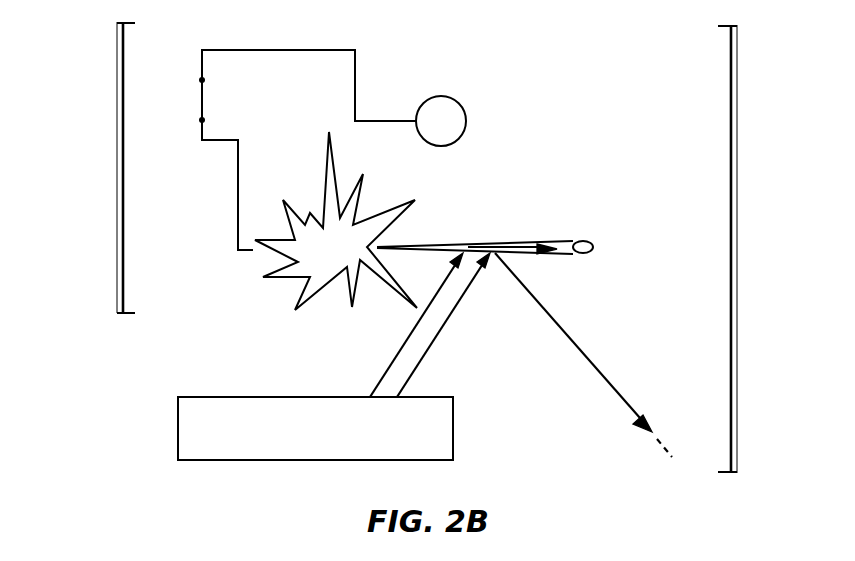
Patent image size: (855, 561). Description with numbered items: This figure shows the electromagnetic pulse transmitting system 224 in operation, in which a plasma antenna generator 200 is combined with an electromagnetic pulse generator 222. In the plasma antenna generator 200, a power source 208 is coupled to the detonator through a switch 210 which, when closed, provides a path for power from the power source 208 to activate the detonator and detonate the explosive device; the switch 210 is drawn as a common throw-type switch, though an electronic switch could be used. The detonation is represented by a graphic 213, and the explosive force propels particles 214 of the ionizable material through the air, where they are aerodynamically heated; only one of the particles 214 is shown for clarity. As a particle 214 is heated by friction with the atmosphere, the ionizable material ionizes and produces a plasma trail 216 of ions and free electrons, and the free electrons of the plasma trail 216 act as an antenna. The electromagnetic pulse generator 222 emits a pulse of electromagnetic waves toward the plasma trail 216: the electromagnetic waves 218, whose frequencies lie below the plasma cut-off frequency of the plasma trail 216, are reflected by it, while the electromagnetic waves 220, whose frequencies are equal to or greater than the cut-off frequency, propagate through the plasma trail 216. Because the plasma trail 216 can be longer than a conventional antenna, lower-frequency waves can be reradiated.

The plasma antenna generator 200 is at (117, 181).
The power source 208 is at (462, 112).
The switch 210 is at (202, 101).
The graphic 213 is at (382, 222).
The particles 214 is at (593, 243).
The plasma trail 216 is at (573, 240).
The electromagnetic waves 218 is at (416, 370).
The electromagnetic waves 220 is at (520, 246).
The electromagnetic pulse generator 222 is at (453, 408).
The electromagnetic pulse transmitting system 224 is at (737, 162).